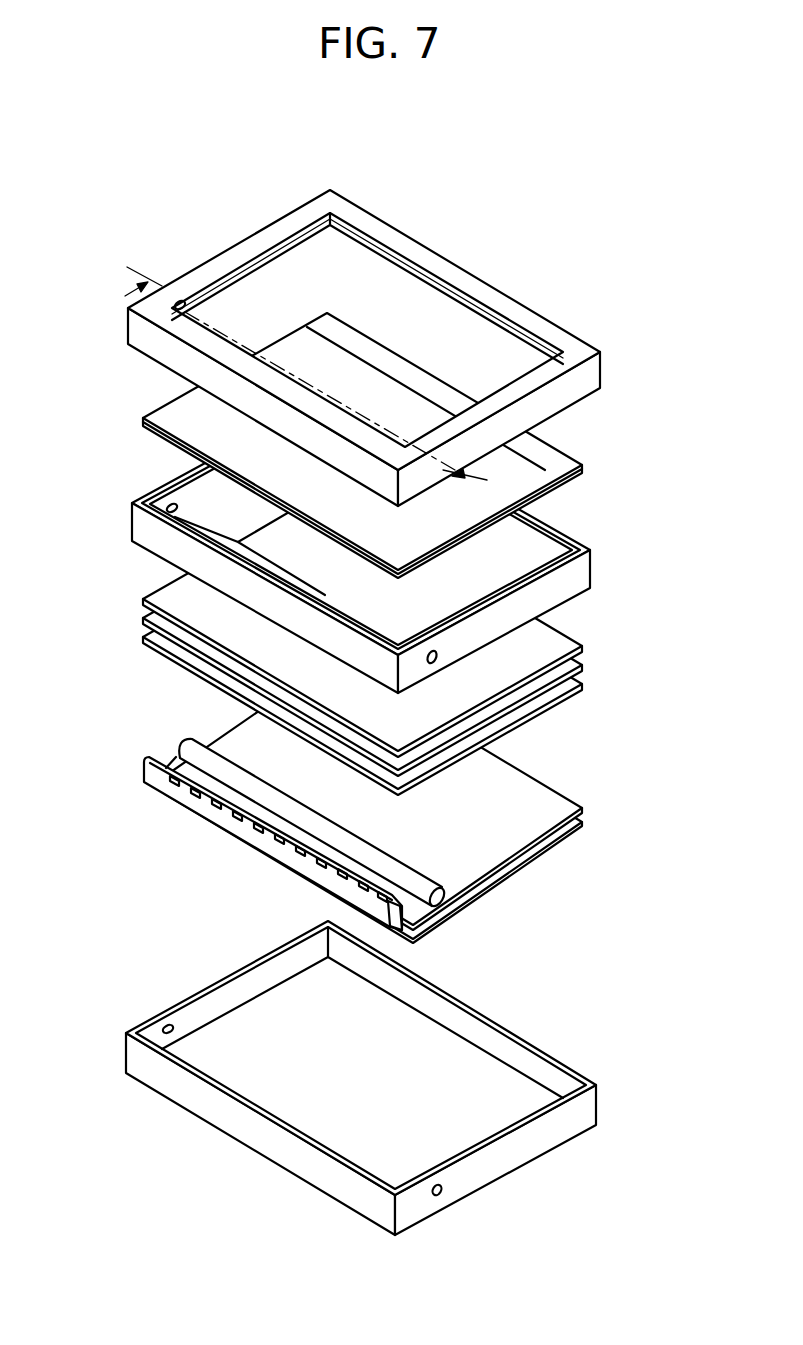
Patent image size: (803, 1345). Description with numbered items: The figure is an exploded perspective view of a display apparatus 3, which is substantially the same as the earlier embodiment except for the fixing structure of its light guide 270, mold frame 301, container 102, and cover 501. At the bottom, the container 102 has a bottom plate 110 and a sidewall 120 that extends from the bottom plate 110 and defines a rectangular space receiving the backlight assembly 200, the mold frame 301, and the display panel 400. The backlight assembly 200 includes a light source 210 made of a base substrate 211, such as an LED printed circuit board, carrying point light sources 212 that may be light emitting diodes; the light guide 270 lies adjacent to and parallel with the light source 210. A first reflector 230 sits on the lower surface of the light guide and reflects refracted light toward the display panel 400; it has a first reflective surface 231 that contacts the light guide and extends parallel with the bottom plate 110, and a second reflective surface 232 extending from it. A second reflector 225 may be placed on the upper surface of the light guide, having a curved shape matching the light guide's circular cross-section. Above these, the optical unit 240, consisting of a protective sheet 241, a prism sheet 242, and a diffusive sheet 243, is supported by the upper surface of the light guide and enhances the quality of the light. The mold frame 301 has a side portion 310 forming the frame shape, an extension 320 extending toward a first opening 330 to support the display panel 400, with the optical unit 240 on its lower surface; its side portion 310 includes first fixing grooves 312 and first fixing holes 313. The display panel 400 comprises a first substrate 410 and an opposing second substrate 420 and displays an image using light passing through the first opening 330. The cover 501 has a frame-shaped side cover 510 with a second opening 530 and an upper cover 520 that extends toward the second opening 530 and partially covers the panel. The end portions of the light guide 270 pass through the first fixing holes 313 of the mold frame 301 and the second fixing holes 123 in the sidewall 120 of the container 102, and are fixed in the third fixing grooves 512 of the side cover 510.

The display apparatus 3 is at (503, 210).
The container 102 is at (655, 1160).
The bottom plate 110 is at (516, 1100).
The sidewall 120 is at (514, 1142).
The second fixing holes 123 is at (168, 1027).
The backlight assembly 200 is at (706, 650).
The light source 210 is at (655, 935).
The base substrate 211 is at (402, 929).
The point light sources 212 is at (398, 904).
The second reflector 225 is at (419, 880).
The first reflector 230 is at (655, 878).
The first reflective surface 231 is at (422, 934).
The second reflective surface 232 is at (493, 888).
The optical unit 240 is at (662, 632).
The protective sheet 241 is at (585, 647).
The prism sheet 242 is at (585, 666).
The diffusive sheet 243 is at (585, 685).
The light guide 270 is at (438, 877).
The mold frame 301 is at (662, 570).
The side portion 310 is at (560, 534).
The first fixing grooves 312 is at (173, 504).
The first fixing holes 313 is at (427, 661).
The extension 320 is at (572, 549).
The first opening 330 is at (520, 566).
The display panel 400 is at (662, 420).
The first substrate 410 is at (562, 464).
The second substrate 420 is at (527, 468).
The cover 501 is at (662, 272).
The side cover 510 is at (598, 366).
The third fixing grooves 512 is at (180, 302).
The upper cover 520 is at (502, 301).
The second opening 530 is at (509, 342).